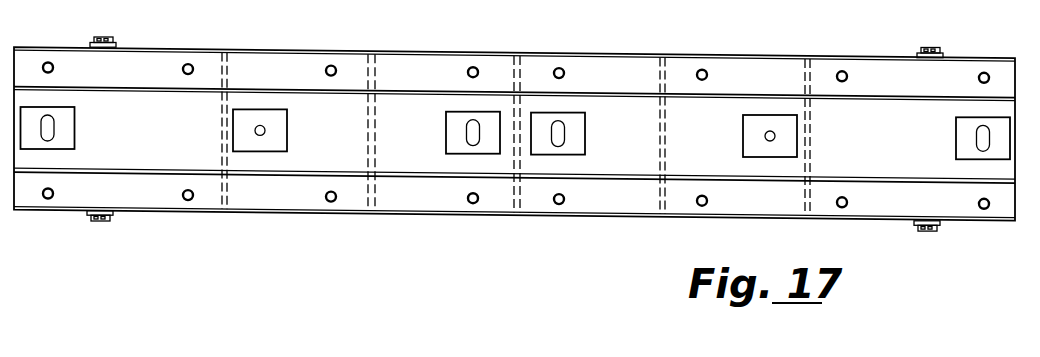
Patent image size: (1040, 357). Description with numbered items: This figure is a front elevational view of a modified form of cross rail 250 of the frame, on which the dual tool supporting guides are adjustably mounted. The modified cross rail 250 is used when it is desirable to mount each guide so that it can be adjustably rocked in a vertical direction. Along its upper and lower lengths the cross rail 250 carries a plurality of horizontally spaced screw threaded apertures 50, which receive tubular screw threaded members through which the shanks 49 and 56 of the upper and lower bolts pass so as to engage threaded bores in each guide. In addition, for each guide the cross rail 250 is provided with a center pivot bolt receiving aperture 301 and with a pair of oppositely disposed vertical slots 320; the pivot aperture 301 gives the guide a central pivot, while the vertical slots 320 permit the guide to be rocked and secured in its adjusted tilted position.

The cross rail 250 is at (645, 146).
The bolt shank 49 is at (190, 64).
The bolt shank 56 is at (188, 199).
The screw threaded aperture 50 is at (984, 208).
The vertical slot 320 is at (50, 126).
The center pivot bolt receiving aperture 301 is at (265, 130).